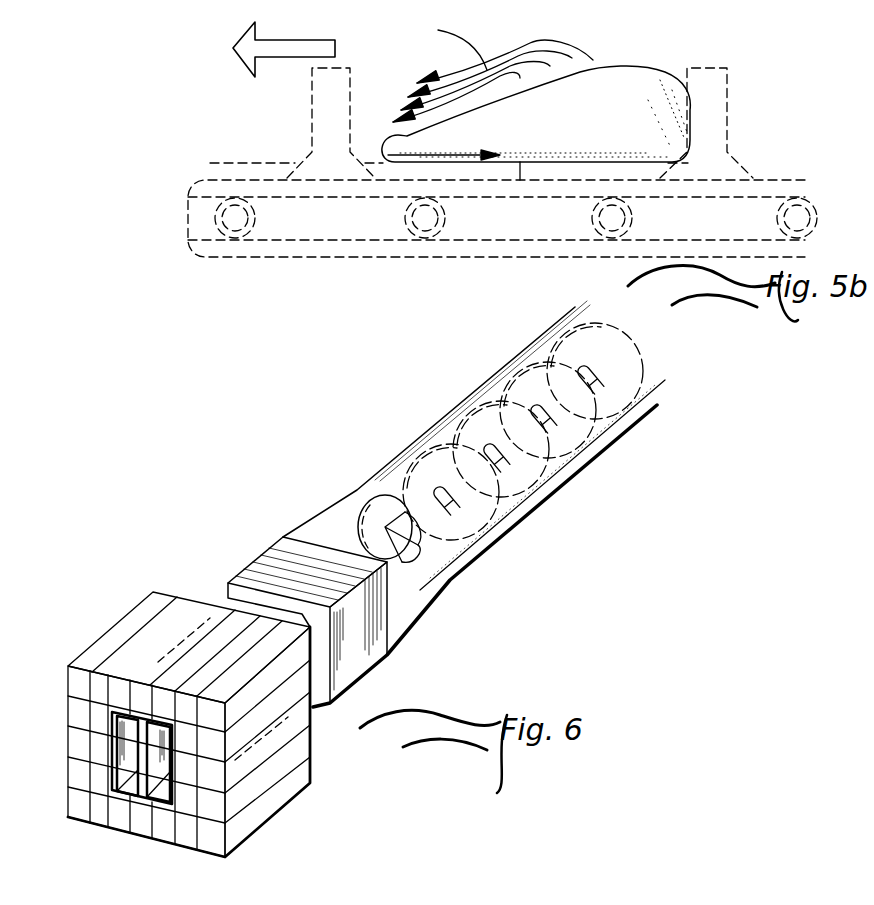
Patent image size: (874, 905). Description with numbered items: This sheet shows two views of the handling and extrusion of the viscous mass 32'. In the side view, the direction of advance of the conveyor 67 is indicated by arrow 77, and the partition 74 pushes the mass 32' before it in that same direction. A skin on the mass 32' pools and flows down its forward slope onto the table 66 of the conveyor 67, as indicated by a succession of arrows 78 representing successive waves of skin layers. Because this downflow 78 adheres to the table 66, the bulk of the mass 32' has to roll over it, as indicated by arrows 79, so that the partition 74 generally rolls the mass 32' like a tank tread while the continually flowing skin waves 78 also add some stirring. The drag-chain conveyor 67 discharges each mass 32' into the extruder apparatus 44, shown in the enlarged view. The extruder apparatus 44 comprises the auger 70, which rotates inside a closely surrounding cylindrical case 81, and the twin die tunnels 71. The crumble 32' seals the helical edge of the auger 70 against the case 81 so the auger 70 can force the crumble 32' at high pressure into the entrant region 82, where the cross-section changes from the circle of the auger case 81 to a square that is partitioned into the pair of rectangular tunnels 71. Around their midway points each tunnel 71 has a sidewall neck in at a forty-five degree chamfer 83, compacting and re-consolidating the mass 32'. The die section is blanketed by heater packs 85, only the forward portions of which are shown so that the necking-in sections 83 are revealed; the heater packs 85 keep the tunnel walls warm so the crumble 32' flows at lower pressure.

In FIG. 5b, the arrow 77 is at (297, 38).
In FIG. 5b, the arrows 78 is at (460, 97).
In FIG. 5b, the arrows 79 is at (459, 154).
In FIG. 5b, the mass 32' is at (536, 114).
In FIG. 5b, the partition 74 is at (693, 67).
In FIG. 5b, the table 66 is at (500, 164).
In FIG. 5b, the conveyor 67 is at (532, 240).
In FIG. 6, the extruder apparatus 44 is at (385, 450).
In FIG. 6, the auger 70 is at (586, 446).
In FIG. 6, the cylindrical case 81 is at (517, 523).
In FIG. 6, the entrant region 82 is at (283, 538).
In FIG. 6, the necking-in section 83 is at (228, 597).
In FIG. 6, the heater packs 85 is at (158, 603).
In FIG. 6, the die tunnels 71 is at (132, 757).